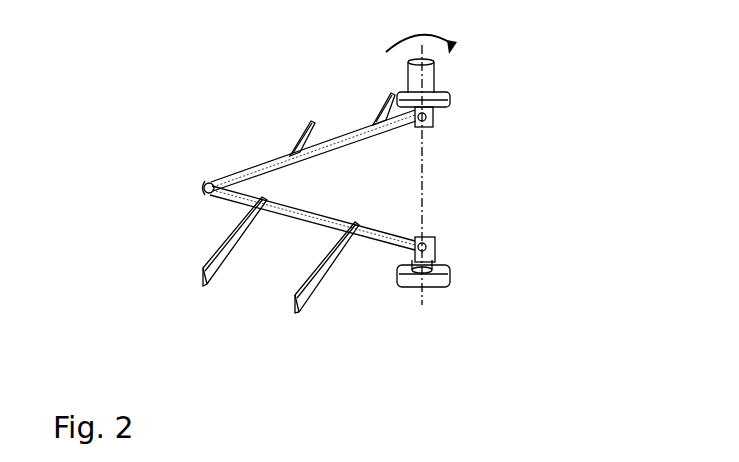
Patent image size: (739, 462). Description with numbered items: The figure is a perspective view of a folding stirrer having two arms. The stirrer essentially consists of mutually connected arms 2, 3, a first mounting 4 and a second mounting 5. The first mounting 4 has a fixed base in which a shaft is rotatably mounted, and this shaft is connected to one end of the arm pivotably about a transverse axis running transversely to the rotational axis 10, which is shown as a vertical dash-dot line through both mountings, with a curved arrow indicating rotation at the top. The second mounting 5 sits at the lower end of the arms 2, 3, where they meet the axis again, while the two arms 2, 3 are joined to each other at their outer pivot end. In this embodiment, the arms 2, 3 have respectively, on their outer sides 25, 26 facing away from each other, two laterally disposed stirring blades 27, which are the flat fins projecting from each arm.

The arm 2 is at (339, 235).
The arm 3 is at (247, 198).
The first mounting 4 is at (445, 98).
The second mounting 5 is at (440, 265).
The rotational axis 10 is at (430, 207).
The outer side 25 is at (262, 163).
The outer side 26 is at (302, 212).
The stirring blades 27 is at (297, 136).